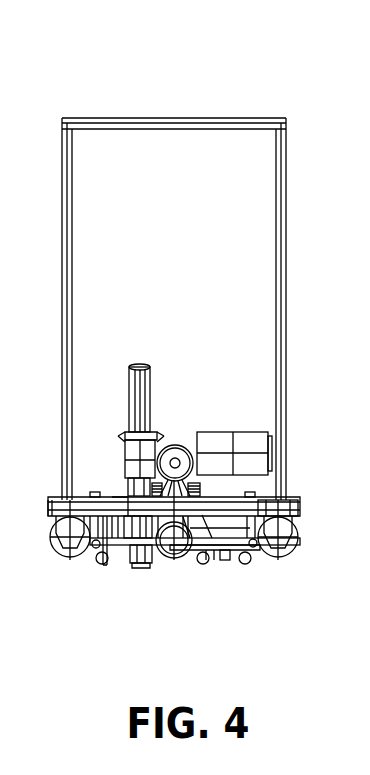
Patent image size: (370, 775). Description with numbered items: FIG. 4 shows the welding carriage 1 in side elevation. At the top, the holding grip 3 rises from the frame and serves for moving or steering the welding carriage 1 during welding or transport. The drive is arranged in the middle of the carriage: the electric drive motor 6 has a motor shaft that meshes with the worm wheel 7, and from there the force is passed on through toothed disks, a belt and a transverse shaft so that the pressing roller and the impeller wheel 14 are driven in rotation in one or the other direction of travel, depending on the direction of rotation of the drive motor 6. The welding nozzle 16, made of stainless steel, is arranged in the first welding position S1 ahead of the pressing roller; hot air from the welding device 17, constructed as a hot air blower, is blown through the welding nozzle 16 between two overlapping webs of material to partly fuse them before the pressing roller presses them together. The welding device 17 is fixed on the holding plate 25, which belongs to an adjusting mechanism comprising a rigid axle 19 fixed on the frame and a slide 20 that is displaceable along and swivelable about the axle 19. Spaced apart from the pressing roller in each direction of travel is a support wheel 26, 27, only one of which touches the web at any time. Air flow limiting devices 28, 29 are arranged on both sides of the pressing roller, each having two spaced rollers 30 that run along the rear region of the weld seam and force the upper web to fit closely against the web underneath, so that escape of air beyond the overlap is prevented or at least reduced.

The welding carriage 1 is at (268, 82).
The holding grip 3 is at (190, 118).
The electric drive motor 6 is at (258, 440).
The worm wheel 7 is at (178, 458).
The impeller wheel 14 is at (166, 560).
The welding nozzle 16 is at (128, 566).
The welding device 17 is at (143, 412).
The axle 19 is at (210, 560).
The slide 20 is at (105, 560).
The holding plate 25 is at (130, 468).
The support wheel 26 is at (60, 552).
The support wheel 27 is at (285, 550).
The air flow limiting device 28 is at (128, 497).
The air flow limiting device 29 is at (231, 558).
The rollers 30 is at (94, 550).
The first welding position S1 is at (138, 568).